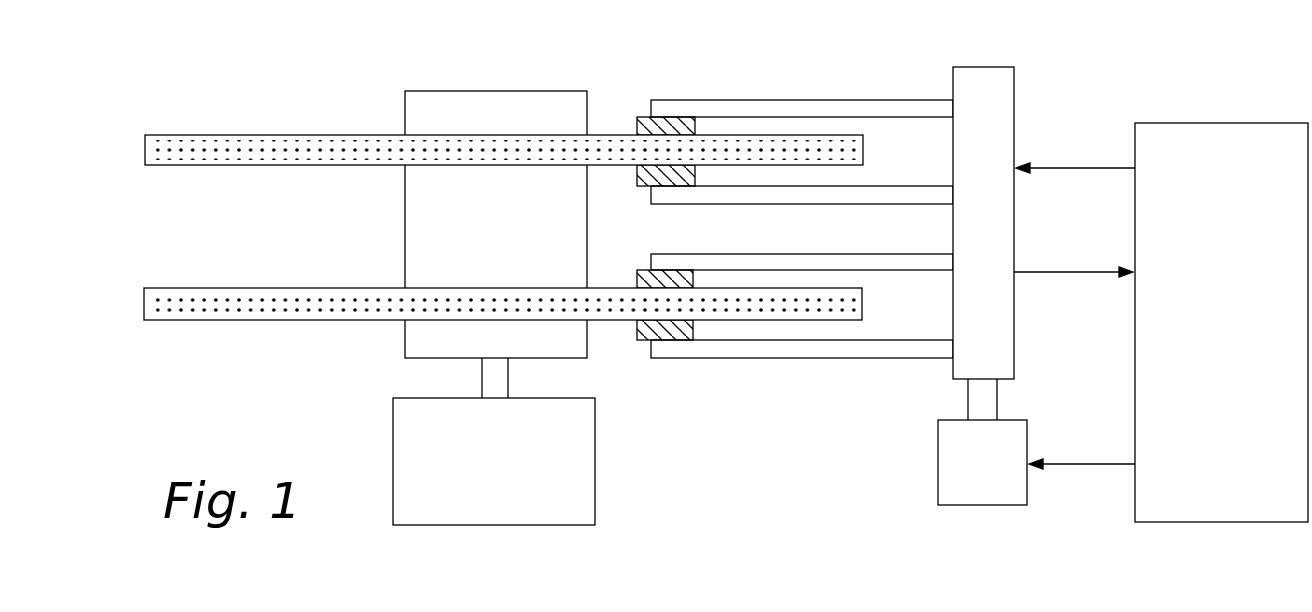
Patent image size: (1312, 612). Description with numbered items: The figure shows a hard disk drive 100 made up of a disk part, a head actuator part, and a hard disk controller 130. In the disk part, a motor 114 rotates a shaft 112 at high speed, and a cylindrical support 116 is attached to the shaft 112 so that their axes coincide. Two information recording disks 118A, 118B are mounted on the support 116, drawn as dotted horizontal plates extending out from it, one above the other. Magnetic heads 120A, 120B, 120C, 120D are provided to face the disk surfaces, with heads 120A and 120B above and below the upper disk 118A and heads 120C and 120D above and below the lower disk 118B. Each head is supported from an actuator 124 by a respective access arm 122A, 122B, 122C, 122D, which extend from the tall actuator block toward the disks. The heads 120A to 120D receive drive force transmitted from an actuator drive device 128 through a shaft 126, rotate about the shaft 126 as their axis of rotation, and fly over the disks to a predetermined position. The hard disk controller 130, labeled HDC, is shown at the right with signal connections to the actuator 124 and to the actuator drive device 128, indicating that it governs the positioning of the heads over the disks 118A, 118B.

The hard disk drive 100 is at (290, 77).
The shaft 112 is at (482, 372).
The motor 114 is at (512, 491).
The cylindrical support 116 is at (452, 91).
The information recording disk 118A is at (175, 134).
The information recording disk 118B is at (172, 320).
The magnetic head 120A is at (640, 117).
The magnetic head 120B is at (643, 185).
The magnetic head 120C is at (645, 270).
The magnetic head 120D is at (643, 341).
The access arm 122A is at (765, 100).
The access arm 122B is at (810, 204).
The access arm 122C is at (785, 254).
The access arm 122D is at (775, 358).
The actuator 124 is at (1018, 80).
The shaft 126 is at (968, 410).
The actuator drive device 128 is at (938, 470).
The hard disk controller 130 is at (1241, 405).